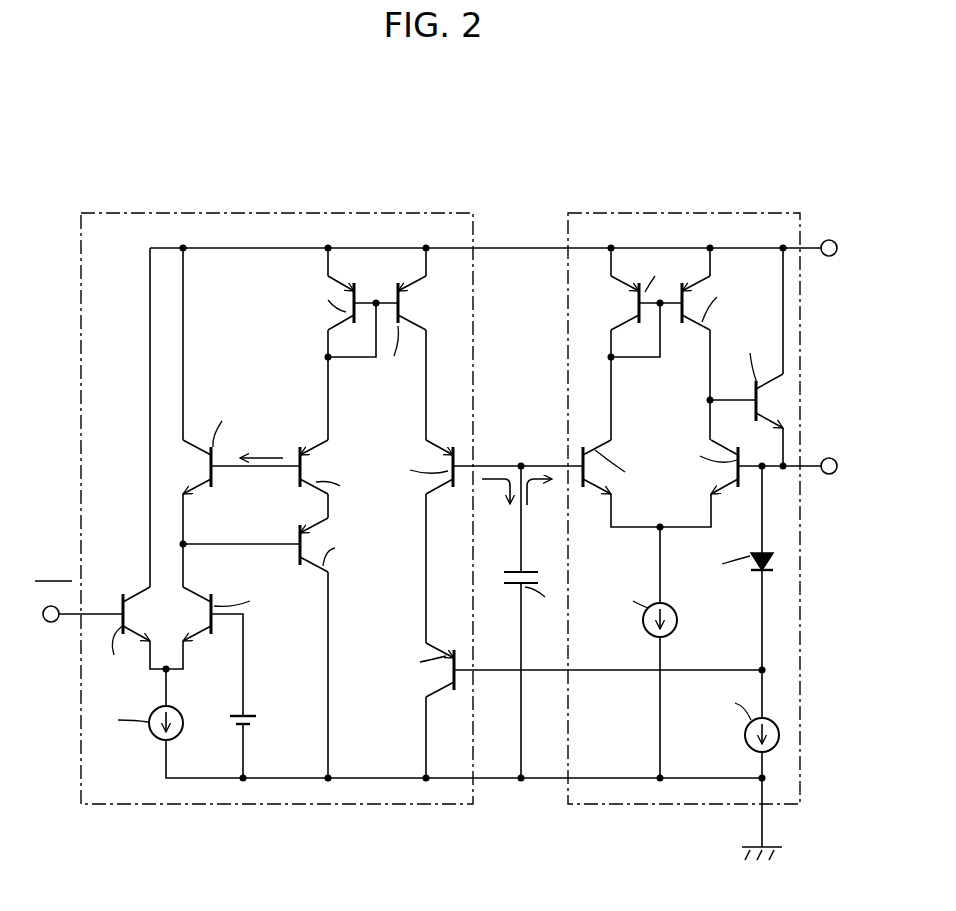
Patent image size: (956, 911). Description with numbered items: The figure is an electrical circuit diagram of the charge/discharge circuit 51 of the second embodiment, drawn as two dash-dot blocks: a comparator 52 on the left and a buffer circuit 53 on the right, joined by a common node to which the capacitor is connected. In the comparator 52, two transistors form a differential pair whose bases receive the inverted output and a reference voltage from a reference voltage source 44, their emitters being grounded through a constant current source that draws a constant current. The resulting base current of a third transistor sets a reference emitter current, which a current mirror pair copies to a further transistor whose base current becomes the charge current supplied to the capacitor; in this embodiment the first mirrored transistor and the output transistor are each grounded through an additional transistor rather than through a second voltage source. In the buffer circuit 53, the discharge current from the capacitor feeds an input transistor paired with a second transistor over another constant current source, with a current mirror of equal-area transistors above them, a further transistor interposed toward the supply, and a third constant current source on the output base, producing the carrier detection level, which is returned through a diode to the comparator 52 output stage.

The charge/discharge circuit 51 is at (276, 137).
The comparator 52 is at (263, 212).
The buffer circuit 53 is at (676, 212).
The reference voltage source 44 is at (250, 712).